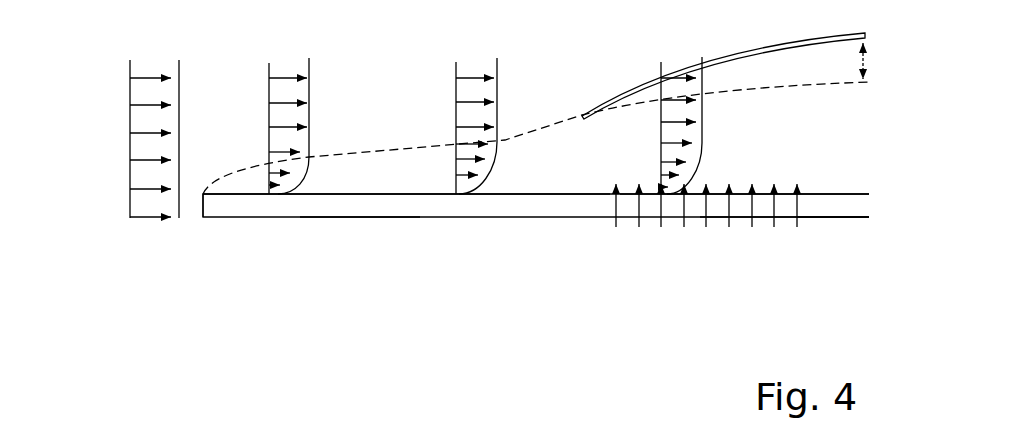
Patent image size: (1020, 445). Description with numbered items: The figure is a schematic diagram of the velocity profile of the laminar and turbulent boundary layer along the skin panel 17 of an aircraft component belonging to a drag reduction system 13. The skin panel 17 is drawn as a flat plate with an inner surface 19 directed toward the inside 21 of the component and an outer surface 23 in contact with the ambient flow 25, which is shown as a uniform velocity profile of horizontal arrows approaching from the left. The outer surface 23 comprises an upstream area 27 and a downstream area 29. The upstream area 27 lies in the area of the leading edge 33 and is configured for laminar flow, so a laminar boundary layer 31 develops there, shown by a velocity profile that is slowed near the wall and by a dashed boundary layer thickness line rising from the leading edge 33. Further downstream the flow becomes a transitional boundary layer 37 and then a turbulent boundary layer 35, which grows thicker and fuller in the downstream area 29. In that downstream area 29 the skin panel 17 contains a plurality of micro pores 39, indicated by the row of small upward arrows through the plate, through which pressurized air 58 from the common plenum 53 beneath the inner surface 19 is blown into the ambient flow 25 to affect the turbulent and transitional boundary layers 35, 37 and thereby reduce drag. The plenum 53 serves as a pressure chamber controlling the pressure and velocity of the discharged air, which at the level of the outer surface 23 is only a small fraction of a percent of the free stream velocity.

The drag reduction system 13 is at (788, 228).
The skin panel 17 is at (849, 207).
The inner surface 19 is at (825, 218).
The inside 21 is at (500, 276).
The outer surface 23 is at (837, 194).
The ambient flow 25 is at (130, 122).
The upstream area 27 is at (360, 207).
The downstream area 29 is at (625, 200).
The laminar boundary layer 31 is at (383, 186).
The leading edge 33 is at (203, 196).
The turbulent boundary layer 35 is at (745, 136).
The transitional boundary layer 37 is at (572, 171).
The micro pores 39 is at (760, 200).
The common plenum 53 is at (742, 285).
The pressurized air 58 is at (777, 205).